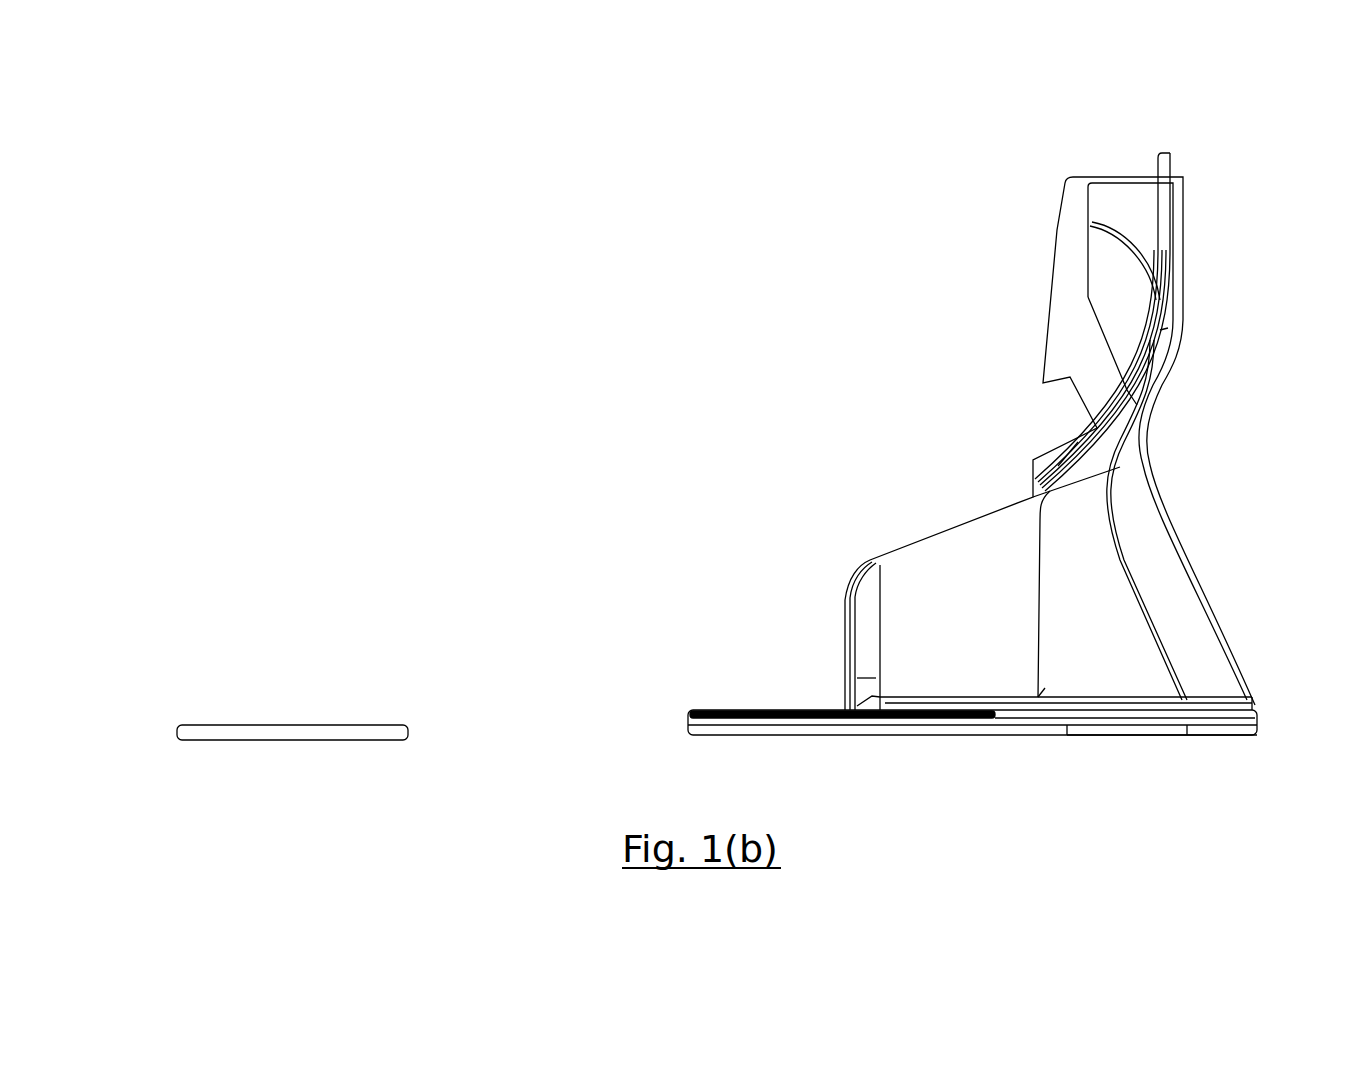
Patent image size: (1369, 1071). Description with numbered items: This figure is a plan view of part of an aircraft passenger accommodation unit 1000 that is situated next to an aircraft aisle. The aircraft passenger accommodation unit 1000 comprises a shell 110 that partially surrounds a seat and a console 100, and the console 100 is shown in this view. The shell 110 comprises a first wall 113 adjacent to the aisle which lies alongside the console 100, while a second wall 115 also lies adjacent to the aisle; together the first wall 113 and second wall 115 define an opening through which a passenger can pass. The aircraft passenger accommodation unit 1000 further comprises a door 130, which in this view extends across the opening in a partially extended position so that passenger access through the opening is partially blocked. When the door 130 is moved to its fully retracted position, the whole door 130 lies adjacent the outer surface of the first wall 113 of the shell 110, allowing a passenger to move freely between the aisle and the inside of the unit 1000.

The aircraft passenger accommodation unit 1000 is at (766, 200).
The console 100 is at (943, 562).
The shell 110 is at (1165, 515).
The first wall 113 is at (1197, 728).
The second wall 115 is at (292, 725).
The door 130 is at (768, 710).